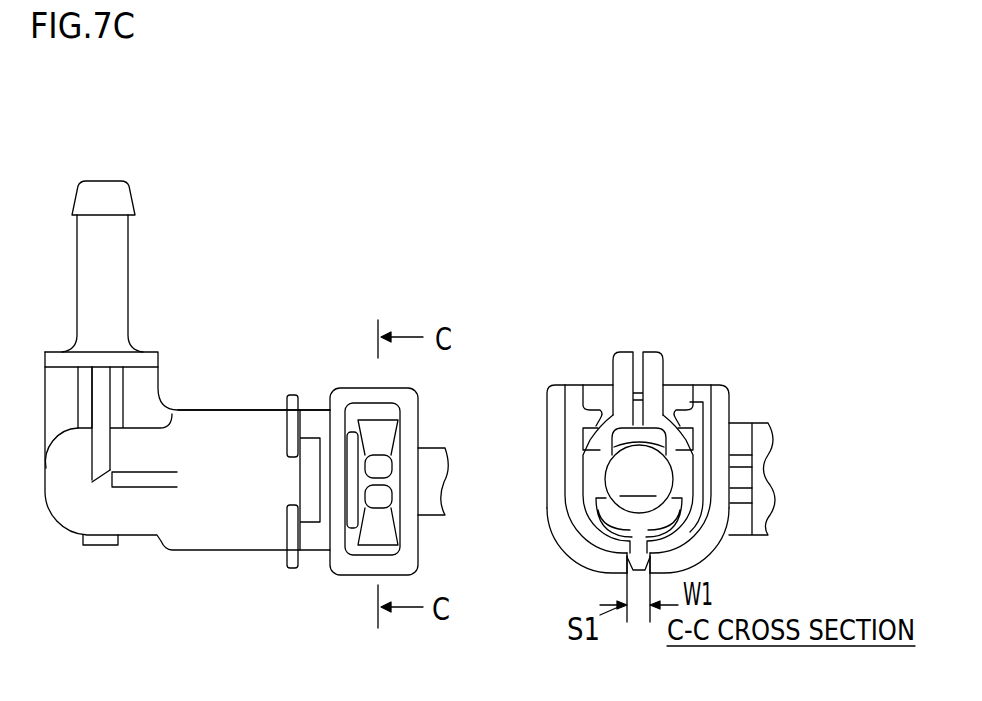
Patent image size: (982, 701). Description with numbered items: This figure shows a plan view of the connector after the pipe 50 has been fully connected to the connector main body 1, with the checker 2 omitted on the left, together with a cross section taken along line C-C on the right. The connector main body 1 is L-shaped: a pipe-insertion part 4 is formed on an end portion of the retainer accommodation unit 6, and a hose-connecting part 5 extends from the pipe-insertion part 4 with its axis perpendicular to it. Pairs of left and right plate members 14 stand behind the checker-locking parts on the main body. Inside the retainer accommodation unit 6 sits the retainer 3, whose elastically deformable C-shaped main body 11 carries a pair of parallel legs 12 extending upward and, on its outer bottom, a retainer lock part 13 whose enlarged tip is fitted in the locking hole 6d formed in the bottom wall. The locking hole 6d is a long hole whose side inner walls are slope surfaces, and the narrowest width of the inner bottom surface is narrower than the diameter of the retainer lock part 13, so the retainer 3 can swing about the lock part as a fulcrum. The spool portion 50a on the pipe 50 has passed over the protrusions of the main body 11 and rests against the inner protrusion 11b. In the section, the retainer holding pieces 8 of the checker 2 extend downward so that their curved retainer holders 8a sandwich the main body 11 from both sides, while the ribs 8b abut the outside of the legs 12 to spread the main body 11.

The connector main body 1 is at (193, 552).
The checker 2 is at (561, 387).
The retainer 3 is at (362, 420).
The pipe-insertion part 4 is at (207, 408).
The hose-connecting part 5 is at (77, 276).
The retainer accommodation unit 6 is at (415, 392).
The locking hole 6d is at (568, 548).
The retainer holding pieces 8 is at (566, 413).
The retainer holders 8a is at (595, 450).
The rib 8b is at (588, 408).
The main body 11 is at (382, 420).
The protrusion 11b is at (683, 512).
The legs 12 is at (398, 438).
The retainer lock part 13 is at (650, 560).
The plate members 14 is at (288, 400).
The pipe 50 is at (433, 517).
The spool portion 50a is at (337, 530).